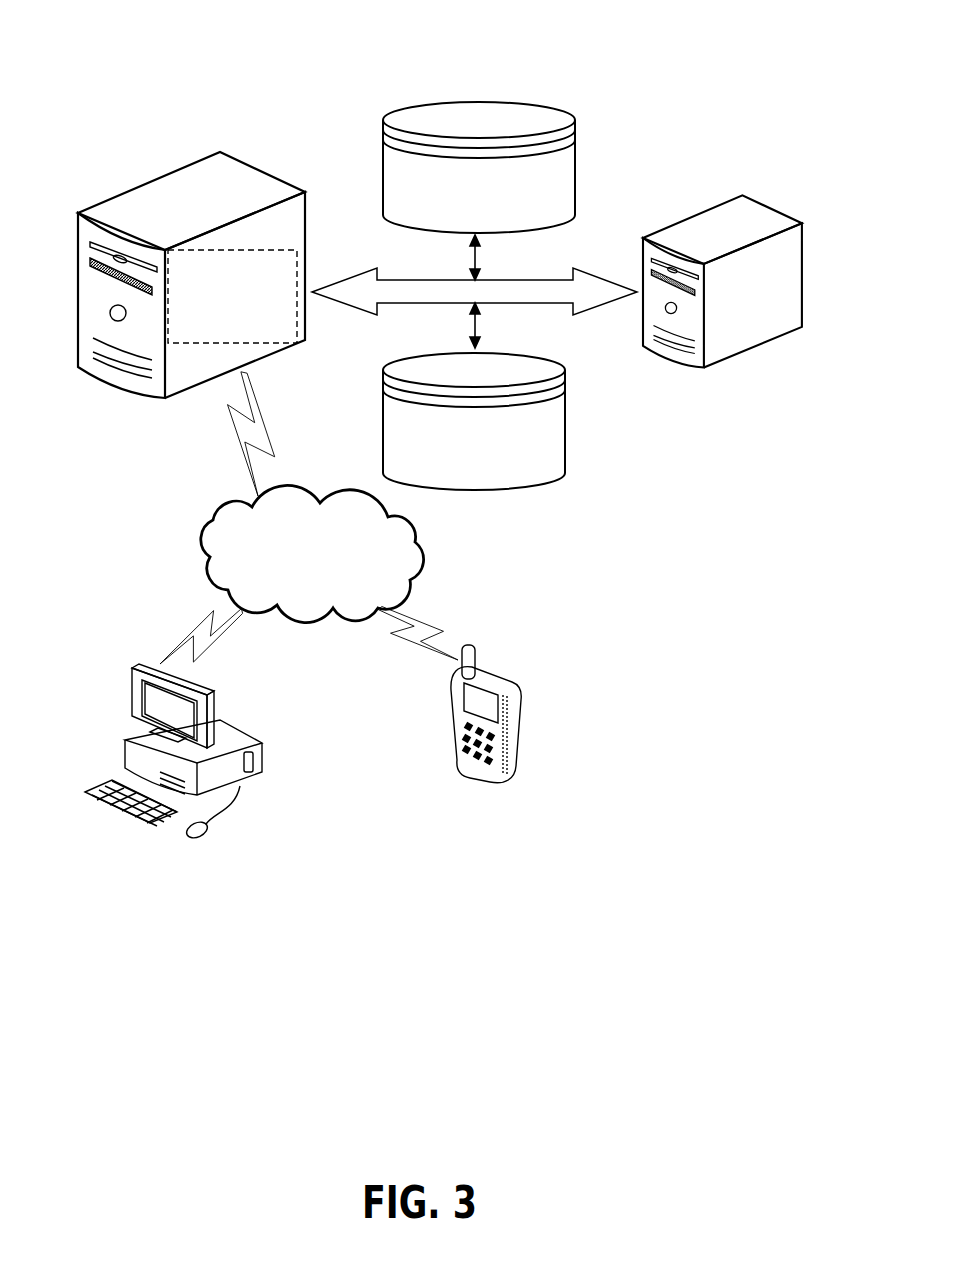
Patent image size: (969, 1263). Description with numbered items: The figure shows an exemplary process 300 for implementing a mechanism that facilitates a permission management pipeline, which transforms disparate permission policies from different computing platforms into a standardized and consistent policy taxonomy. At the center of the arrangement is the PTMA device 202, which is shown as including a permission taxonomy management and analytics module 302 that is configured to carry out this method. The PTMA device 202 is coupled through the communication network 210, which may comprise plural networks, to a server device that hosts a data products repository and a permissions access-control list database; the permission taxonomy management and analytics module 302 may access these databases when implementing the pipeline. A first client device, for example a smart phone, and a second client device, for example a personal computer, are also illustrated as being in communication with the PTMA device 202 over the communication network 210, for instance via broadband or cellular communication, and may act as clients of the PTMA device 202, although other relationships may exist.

The process 300 is at (272, 71).
The PTMA device 202 is at (152, 192).
The permission taxonomy management and analytics module 302 is at (232, 296).
The communication network 210 is at (398, 449).